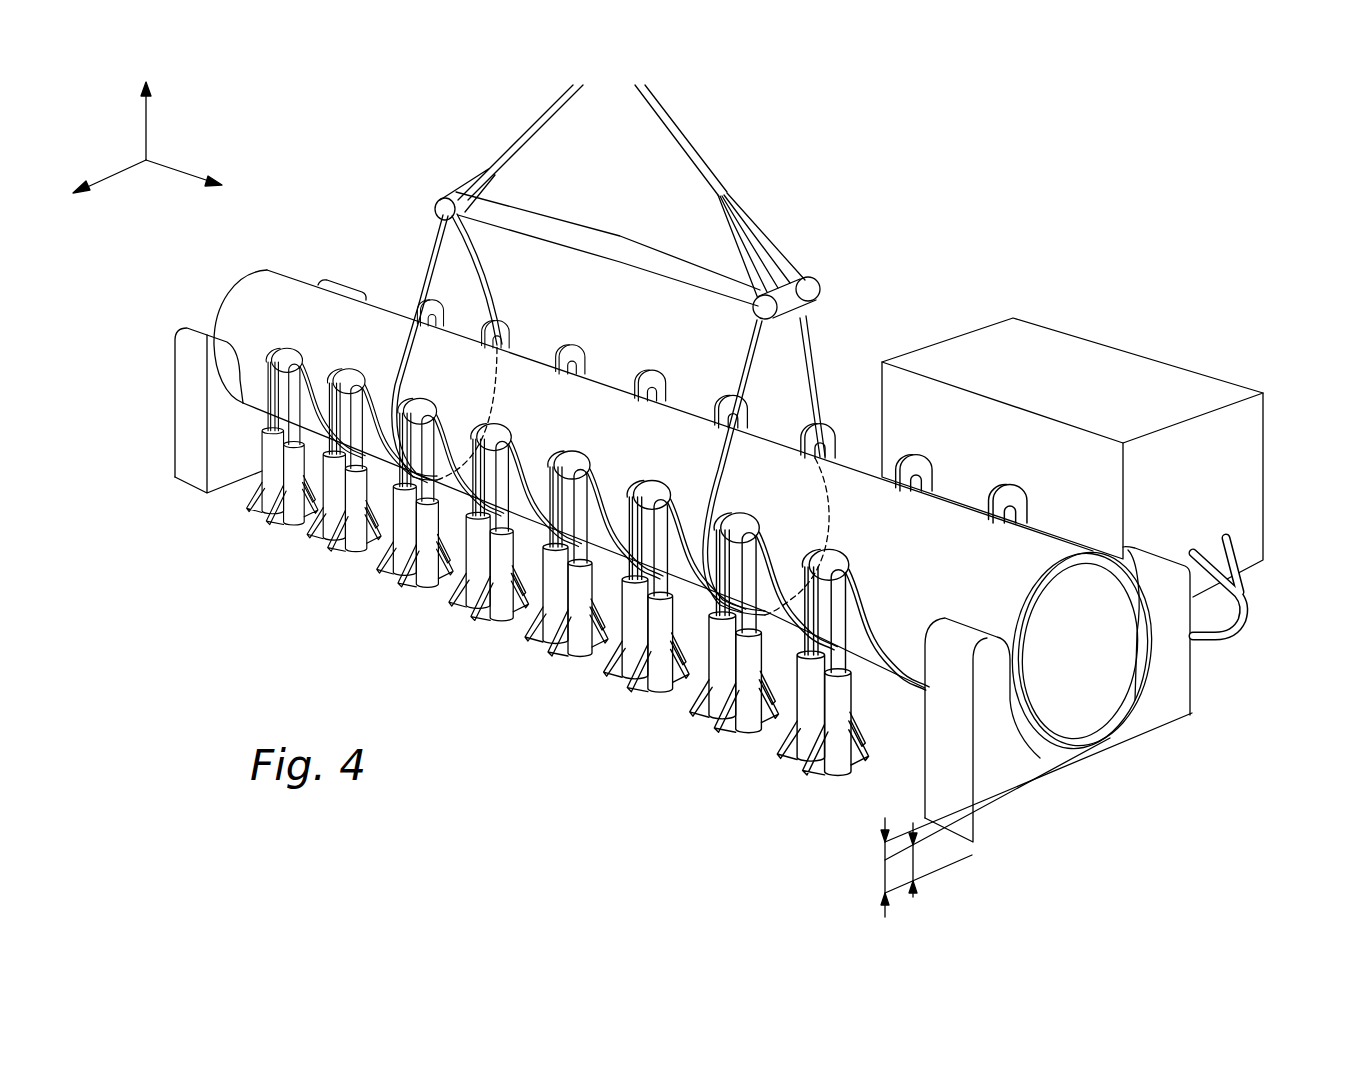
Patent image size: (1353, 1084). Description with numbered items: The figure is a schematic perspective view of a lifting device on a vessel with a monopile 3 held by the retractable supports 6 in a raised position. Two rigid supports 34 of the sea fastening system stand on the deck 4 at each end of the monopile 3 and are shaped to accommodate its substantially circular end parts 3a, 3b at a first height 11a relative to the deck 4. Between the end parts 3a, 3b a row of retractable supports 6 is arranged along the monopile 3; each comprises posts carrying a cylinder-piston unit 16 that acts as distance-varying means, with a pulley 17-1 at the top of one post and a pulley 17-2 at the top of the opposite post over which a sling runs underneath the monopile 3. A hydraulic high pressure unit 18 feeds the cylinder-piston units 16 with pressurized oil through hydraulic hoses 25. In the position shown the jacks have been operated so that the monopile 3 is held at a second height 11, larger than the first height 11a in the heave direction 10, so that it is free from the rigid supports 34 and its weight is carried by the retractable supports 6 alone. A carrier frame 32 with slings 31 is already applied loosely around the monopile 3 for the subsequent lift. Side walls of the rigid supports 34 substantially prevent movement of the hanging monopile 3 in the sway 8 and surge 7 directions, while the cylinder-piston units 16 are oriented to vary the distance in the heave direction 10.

The monopile 3 is at (680, 485).
The end part of the monopile 3a is at (233, 287).
The end part of the monopile 3b is at (1120, 700).
The deck 4 is at (434, 667).
The retractable supports 6 is at (587, 572).
The surge direction 7 is at (180, 172).
The sway direction 8 is at (115, 174).
The heave direction 10 is at (146, 128).
The second height 11 is at (883, 876).
The first height 11a is at (915, 862).
The cylinder-piston unit 16 is at (330, 480).
The pulley 17-1 is at (288, 347).
The pulley 17-2 is at (655, 377).
The hydraulic high pressure unit 18 is at (1093, 378).
The hydraulic hoses 25 is at (1247, 600).
The slings 31 is at (400, 352).
The carrier frame 32 is at (602, 238).
The rigid supports 34 is at (182, 410).